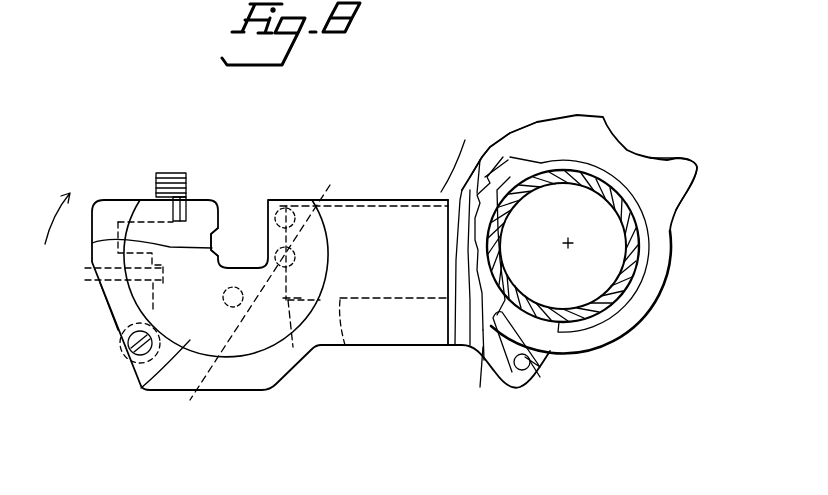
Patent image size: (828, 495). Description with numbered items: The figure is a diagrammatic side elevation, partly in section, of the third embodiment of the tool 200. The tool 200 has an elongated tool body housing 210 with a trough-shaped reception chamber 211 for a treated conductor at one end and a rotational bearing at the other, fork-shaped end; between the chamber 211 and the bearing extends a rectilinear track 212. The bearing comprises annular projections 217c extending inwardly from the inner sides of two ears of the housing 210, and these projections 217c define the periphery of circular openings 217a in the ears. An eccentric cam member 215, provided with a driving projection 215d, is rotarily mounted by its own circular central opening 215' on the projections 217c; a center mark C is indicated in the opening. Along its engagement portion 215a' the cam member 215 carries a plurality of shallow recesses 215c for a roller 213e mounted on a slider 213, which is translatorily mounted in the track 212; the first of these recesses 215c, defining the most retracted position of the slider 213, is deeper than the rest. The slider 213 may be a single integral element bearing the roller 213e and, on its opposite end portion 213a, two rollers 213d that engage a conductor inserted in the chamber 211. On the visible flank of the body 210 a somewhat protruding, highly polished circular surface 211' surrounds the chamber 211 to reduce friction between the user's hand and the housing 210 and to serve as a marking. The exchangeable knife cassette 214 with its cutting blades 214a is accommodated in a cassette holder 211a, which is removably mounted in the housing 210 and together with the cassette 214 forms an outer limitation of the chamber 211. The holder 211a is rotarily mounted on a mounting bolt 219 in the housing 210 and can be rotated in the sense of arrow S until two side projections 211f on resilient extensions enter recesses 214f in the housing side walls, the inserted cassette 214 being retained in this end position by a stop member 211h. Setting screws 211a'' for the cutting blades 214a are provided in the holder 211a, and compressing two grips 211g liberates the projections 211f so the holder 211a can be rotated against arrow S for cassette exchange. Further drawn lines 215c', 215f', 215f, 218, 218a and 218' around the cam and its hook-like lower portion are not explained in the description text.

The tool 200 is at (304, 137).
The arrow S is at (50, 218).
The reception chamber 211 is at (270, 295).
The tool body housing 210 is at (386, 340).
The rectilinear track 212 is at (344, 338).
The circular surface 211' is at (139, 373).
The cassette holder 211a is at (81, 306).
The setting screws 211a'' is at (97, 266).
The cutting blades 214a is at (92, 243).
The grips 211g is at (171, 173).
The side projections 211f is at (186, 208).
The recesses 214f is at (173, 212).
The knife cassette 214 is at (222, 237).
The mounting bolt 219 is at (127, 344).
The stop member 211h is at (125, 368).
The rollers 213d is at (290, 207).
The end portion of slider 213a is at (322, 203).
The roller 213e is at (445, 215).
The slider 213 is at (293, 346).
The eccentric cam member 215 is at (579, 234).
The engagement portion 215a' is at (519, 128).
The driving projection 215d is at (684, 160).
The circular central opening 215' is at (567, 244).
The annular projections 217c is at (634, 268).
The circular openings 217a is at (578, 278).
The center C is at (584, 242).
The shallow recesses 215c is at (476, 226).
The lever arm edge 215c' is at (434, 278).
The lever arm flange 215f' is at (435, 168).
The lever arm flange 215f is at (461, 360).
The hook 218 is at (539, 352).
The hook pin 218a is at (526, 369).
The hook edge 218' is at (479, 377).